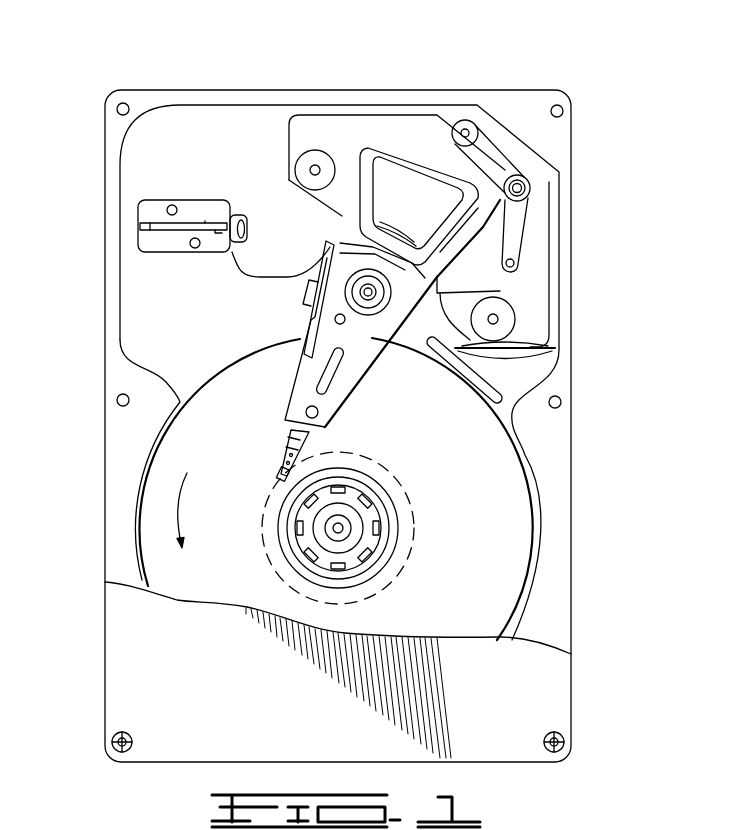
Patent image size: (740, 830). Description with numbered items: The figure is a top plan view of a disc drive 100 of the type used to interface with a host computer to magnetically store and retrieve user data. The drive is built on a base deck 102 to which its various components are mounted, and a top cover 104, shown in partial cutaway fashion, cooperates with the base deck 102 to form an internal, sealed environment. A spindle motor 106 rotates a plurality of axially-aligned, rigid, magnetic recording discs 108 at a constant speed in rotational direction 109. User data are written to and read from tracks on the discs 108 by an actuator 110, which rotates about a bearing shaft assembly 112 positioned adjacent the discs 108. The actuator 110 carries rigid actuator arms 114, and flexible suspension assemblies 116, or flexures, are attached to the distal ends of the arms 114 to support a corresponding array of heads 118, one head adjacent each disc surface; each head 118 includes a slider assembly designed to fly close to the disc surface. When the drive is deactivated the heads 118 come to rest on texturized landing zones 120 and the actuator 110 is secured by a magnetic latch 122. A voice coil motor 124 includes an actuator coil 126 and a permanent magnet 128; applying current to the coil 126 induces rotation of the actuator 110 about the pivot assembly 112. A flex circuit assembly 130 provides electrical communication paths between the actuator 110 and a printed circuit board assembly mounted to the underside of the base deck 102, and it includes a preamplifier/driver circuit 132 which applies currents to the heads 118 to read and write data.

The disc drive 100 is at (185, 65).
The base deck 102 is at (148, 302).
The top cover 104 is at (130, 642).
The spindle motor 106 is at (363, 510).
The magnetic recording discs 108 is at (505, 545).
The rotational direction 109 is at (185, 512).
The actuator 110 is at (363, 342).
The bearing shaft assembly 112 is at (385, 296).
The actuator arms 114 is at (342, 378).
The flexible suspension assemblies 116 is at (292, 447).
The heads 118 is at (278, 470).
The texturized landing zones 120 is at (437, 590).
The magnetic latch 122 is at (520, 232).
The voice coil motor 124 is at (407, 127).
The actuator coil 126 is at (380, 143).
The permanent magnet 128 is at (487, 273).
The flex circuit assembly 130 is at (245, 283).
The preamplifier/driver circuit 132 is at (303, 288).